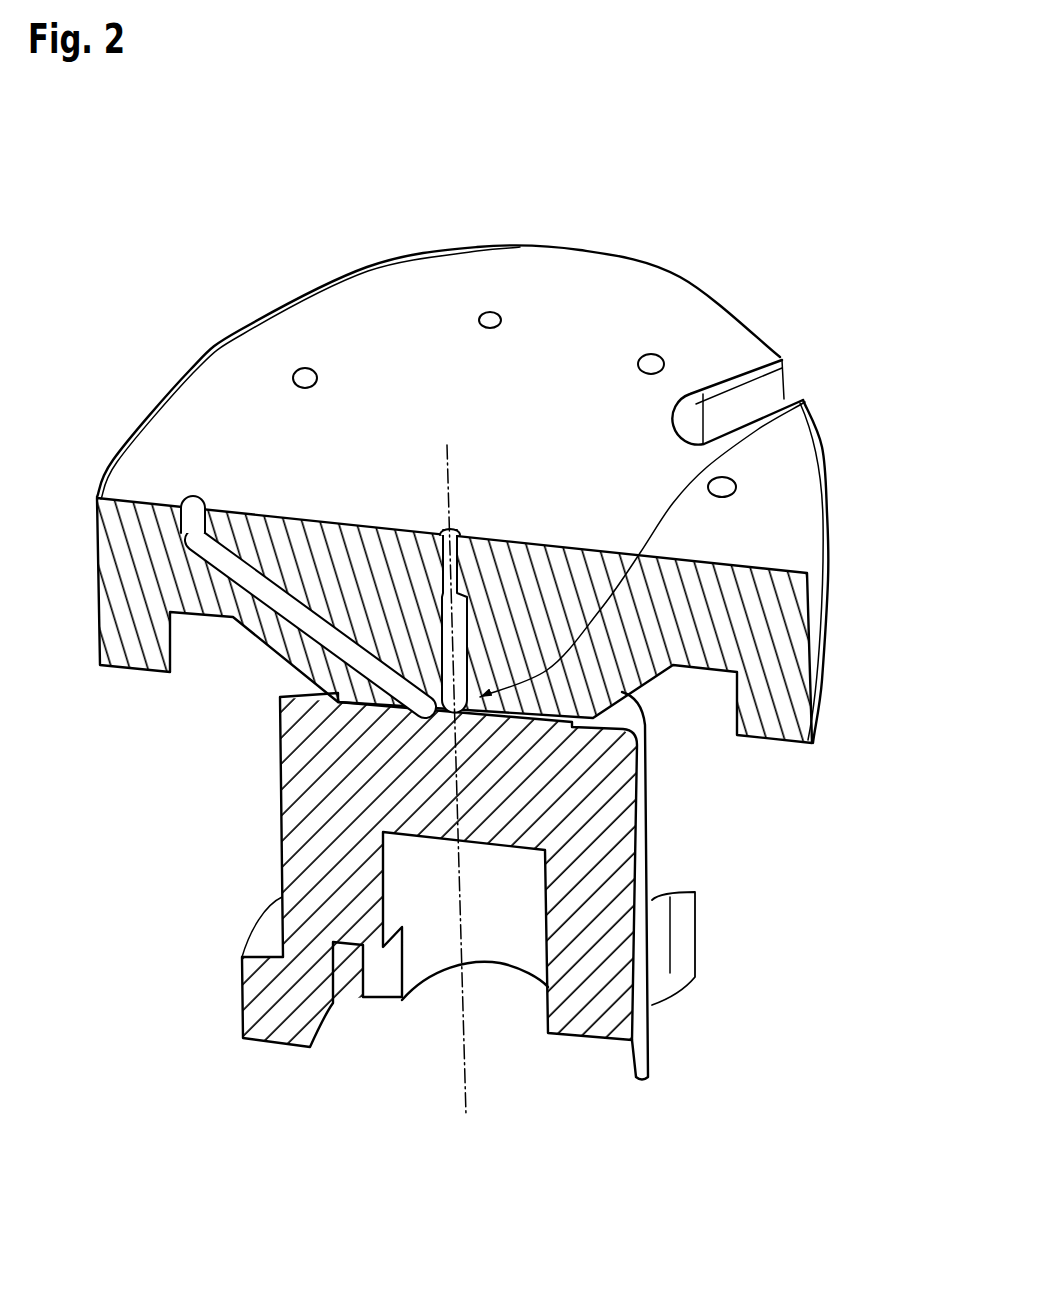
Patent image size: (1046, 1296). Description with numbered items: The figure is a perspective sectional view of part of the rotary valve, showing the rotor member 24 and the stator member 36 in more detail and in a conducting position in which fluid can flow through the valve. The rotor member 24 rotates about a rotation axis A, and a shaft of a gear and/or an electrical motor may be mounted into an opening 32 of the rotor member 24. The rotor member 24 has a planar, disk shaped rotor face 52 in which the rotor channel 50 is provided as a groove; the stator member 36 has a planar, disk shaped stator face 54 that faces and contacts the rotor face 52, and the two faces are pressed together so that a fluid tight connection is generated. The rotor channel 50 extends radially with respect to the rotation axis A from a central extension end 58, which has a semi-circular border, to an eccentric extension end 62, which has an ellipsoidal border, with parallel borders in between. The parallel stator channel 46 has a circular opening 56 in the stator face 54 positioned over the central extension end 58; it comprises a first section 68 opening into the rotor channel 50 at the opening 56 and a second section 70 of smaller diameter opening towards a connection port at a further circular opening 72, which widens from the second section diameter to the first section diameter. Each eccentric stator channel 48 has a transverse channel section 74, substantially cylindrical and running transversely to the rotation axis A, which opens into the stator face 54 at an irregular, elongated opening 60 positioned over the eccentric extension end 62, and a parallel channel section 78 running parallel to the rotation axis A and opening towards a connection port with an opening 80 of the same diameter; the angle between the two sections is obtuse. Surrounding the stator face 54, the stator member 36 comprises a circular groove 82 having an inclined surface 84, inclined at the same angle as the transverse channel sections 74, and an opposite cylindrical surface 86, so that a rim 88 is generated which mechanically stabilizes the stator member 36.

The rotor member 24 is at (620, 1013).
The opening 32 is at (437, 1013).
The stator member 36 is at (817, 610).
The parallel stator channel 46 is at (480, 633).
The eccentric stator channel 48 is at (307, 357).
The rotor channel 50 is at (400, 722).
The rotor face 52 is at (552, 710).
The stator face 54 is at (650, 827).
The circular opening 56 is at (810, 418).
The central extension end 58 is at (467, 727).
The elongated opening 60 is at (337, 524).
The eccentric extension end 62 is at (375, 718).
The first section 68 is at (480, 617).
The second section 70 is at (440, 548).
The further circular opening 72 is at (437, 513).
The transverse channel section 74 is at (222, 590).
The parallel channel section 78 is at (180, 503).
The opening 80 is at (297, 370).
The circular groove 82 is at (220, 640).
The inclined surface 84 is at (293, 655).
The cylindrical surface 86 is at (180, 627).
The rim 88 is at (120, 637).
The rotation axis A is at (466, 1098).